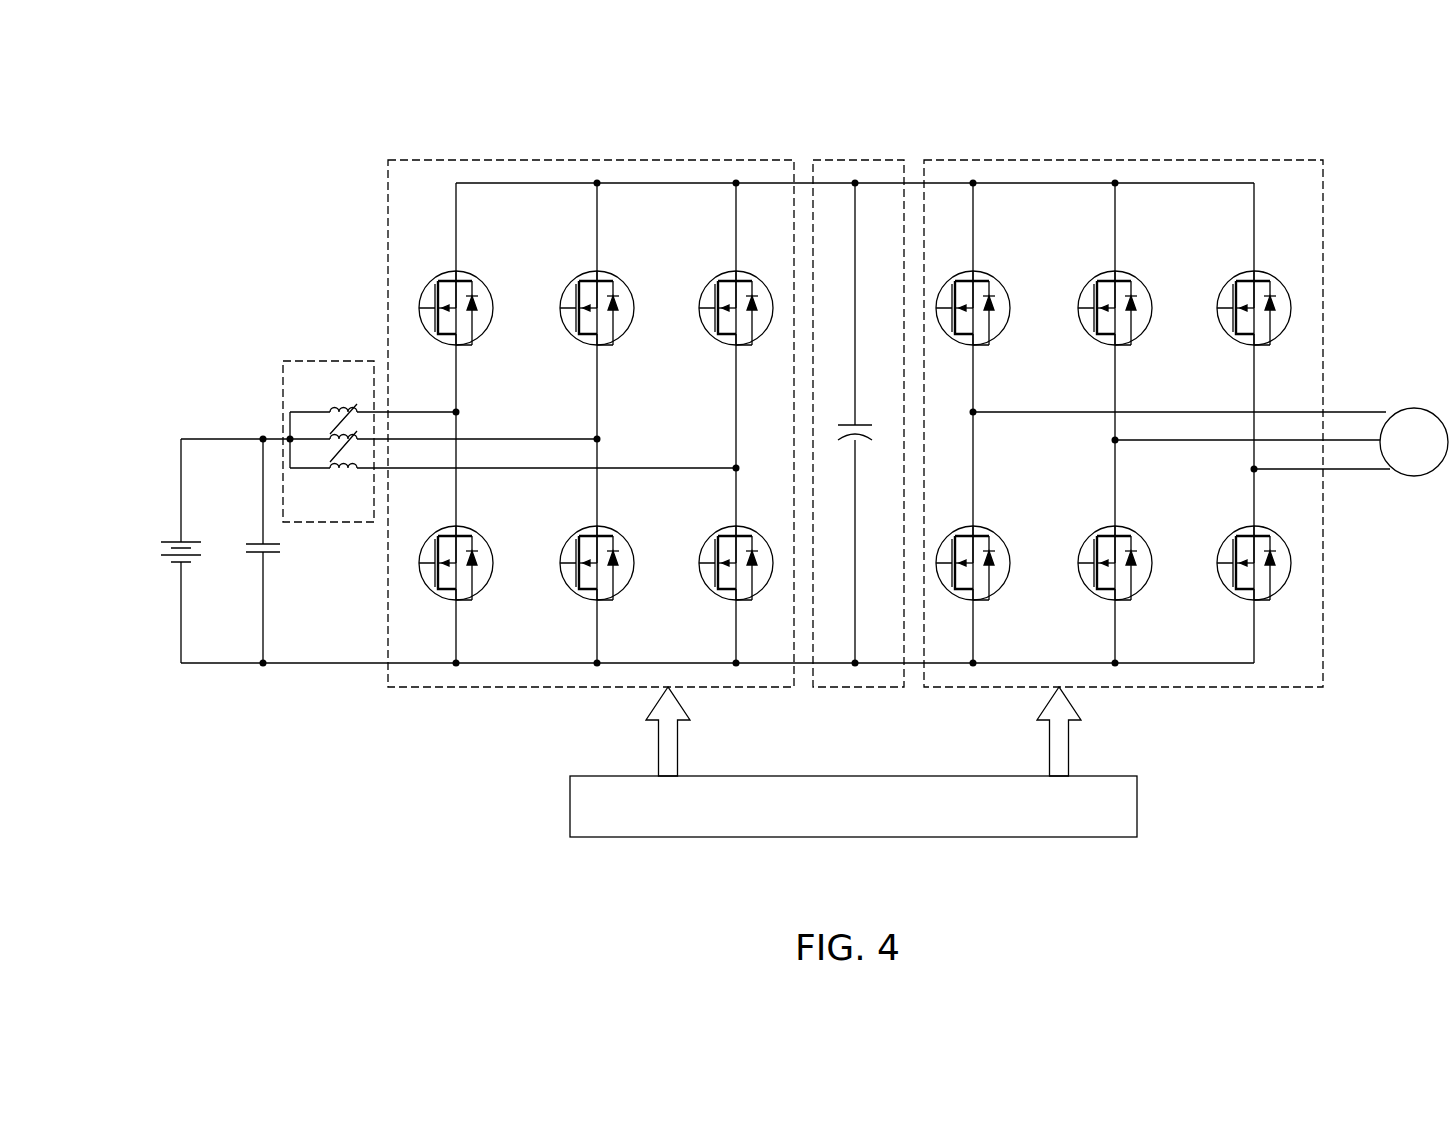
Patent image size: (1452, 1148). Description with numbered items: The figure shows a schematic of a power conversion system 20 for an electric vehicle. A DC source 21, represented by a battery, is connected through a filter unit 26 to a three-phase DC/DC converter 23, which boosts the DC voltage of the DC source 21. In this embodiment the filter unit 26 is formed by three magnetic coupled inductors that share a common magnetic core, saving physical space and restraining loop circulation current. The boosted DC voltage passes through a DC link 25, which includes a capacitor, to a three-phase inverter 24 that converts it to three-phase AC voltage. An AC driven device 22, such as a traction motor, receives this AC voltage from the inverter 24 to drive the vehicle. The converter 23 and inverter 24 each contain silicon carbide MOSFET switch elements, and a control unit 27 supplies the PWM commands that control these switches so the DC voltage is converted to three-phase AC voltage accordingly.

The power conversion system 20 is at (256, 120).
The DC source 21 is at (173, 540).
The AC driven device 22 is at (1408, 408).
The three-phase DC/DC converter 23 is at (594, 160).
The three-phase inverter 24 is at (1123, 160).
The DC link 25 is at (860, 160).
The filter unit 26 is at (320, 360).
The control unit 27 is at (570, 805).